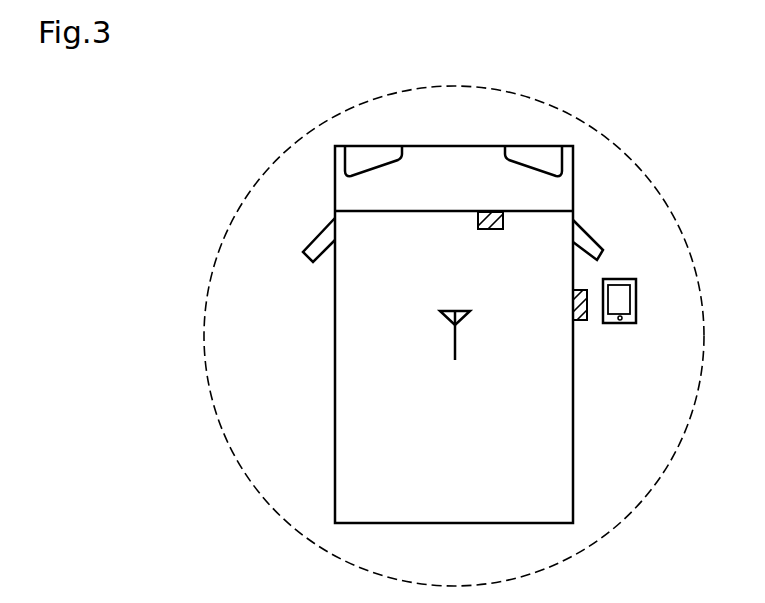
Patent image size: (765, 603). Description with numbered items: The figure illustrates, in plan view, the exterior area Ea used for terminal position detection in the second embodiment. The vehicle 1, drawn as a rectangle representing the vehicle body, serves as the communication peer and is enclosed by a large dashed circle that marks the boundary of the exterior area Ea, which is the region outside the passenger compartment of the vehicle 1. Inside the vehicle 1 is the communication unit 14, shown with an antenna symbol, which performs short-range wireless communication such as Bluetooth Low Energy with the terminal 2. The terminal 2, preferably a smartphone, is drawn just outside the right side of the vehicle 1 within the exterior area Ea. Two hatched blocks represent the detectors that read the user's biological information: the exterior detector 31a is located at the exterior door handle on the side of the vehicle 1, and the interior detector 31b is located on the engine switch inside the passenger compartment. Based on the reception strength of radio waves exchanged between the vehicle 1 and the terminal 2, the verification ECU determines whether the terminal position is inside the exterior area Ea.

The exterior area Ea is at (527, 94).
The vehicle 1 is at (334, 337).
The communication unit 14 is at (454, 342).
The interior detector 31b is at (486, 230).
The exterior detector 31a is at (585, 322).
The terminal 2 is at (638, 300).